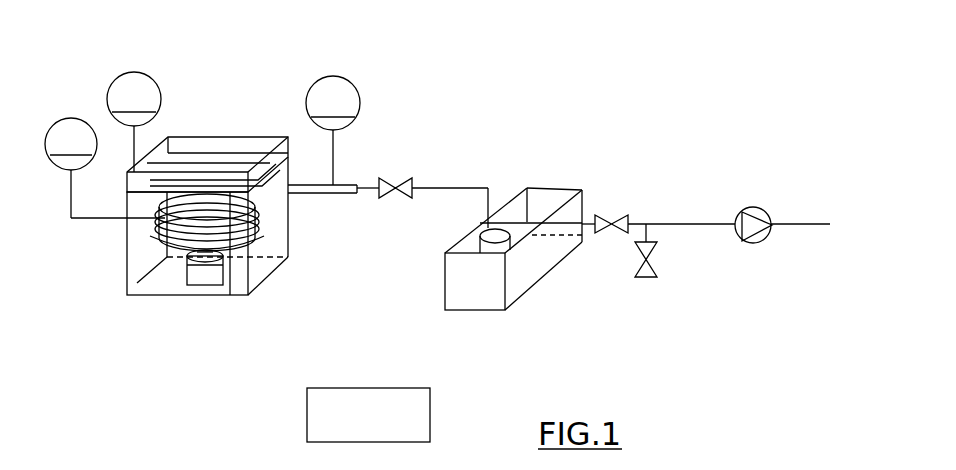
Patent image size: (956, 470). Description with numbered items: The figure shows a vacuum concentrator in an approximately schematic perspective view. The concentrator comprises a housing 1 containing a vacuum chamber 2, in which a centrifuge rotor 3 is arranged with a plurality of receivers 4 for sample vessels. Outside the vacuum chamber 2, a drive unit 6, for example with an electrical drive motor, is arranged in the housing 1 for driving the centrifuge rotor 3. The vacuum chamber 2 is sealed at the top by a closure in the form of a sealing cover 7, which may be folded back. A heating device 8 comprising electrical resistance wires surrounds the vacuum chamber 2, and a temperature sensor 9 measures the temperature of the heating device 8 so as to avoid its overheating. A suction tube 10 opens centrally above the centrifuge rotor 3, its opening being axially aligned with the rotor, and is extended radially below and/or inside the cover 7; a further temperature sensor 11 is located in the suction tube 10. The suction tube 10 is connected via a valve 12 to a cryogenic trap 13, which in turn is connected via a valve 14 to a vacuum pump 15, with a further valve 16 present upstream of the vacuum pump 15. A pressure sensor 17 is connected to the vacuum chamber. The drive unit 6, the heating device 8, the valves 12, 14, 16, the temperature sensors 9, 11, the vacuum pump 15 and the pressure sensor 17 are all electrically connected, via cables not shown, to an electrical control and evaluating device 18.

The housing 1 is at (127, 295).
The vacuum chamber 2 is at (247, 238).
The centrifuge rotor 3 is at (168, 220).
The receivers 4 is at (229, 262).
The drive unit 6 is at (187, 284).
The sealing cover 7 is at (202, 140).
The heating device 8 is at (168, 250).
The temperature sensor 9 is at (58, 117).
The suction tube 10 is at (232, 158).
The further temperature sensor 11 is at (355, 90).
The valve 12 is at (394, 200).
The cryogenic trap 13 is at (548, 256).
The valve 14 is at (612, 234).
The vacuum pump 15 is at (755, 244).
The further valve 16 is at (657, 270).
The pressure sensor 17 is at (143, 73).
The electrical control and evaluating device 18 is at (380, 430).